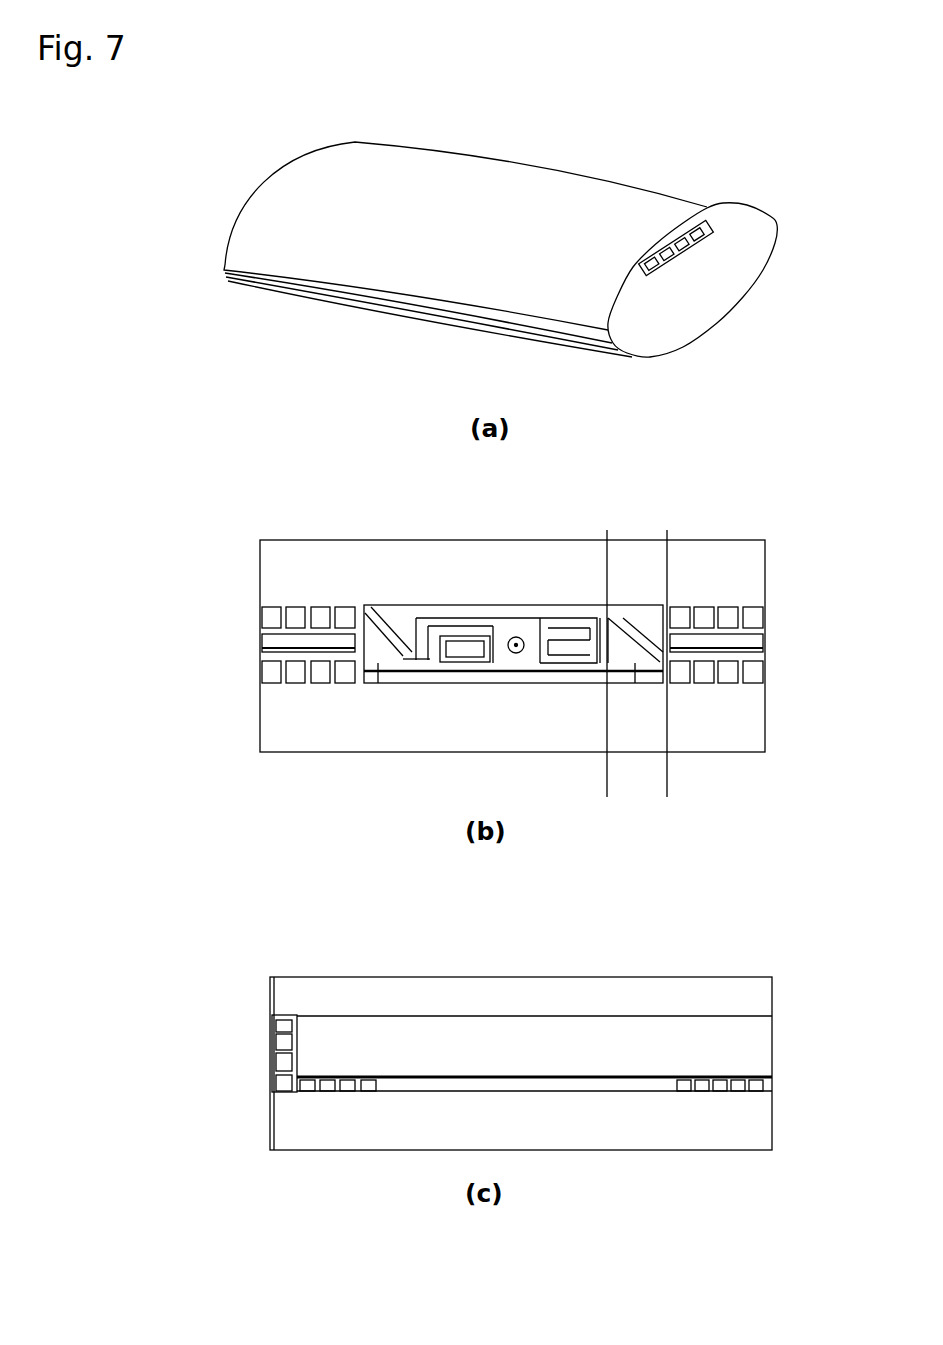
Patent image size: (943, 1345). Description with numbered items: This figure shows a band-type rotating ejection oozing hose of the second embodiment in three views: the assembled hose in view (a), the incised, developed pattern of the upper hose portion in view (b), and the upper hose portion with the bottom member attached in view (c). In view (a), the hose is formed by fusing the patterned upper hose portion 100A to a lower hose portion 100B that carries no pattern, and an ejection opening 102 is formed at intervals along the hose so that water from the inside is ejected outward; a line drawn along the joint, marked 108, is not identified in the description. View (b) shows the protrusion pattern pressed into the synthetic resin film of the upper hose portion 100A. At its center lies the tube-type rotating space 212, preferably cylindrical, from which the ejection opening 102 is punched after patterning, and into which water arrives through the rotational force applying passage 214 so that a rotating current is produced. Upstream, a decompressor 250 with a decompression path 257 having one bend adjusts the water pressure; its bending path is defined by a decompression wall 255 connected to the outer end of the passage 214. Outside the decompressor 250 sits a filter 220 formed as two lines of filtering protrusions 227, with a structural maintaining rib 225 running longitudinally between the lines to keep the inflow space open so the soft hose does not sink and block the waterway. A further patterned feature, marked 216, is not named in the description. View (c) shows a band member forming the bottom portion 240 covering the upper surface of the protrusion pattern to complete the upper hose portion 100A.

The ejection opening 102 is at (490, 197).
The upper hose portion 100A is at (582, 190).
The lower hose portion 100B is at (490, 331).
The hinge 108 is at (413, 318).
The bottom portion 240 is at (703, 247).
The rotating space 212 is at (503, 615).
The rotational force applying passage 214 is at (556, 684).
The conductive pattern 216 is at (570, 628).
The structural maintaining rib 225 is at (322, 640).
The filtering protrusion 227 is at (288, 607).
The decompressor 250 is at (637, 663).
The decompression wall 255 is at (380, 684).
The decompression path 257 is at (643, 602).
The filter 220 is at (716, 700).